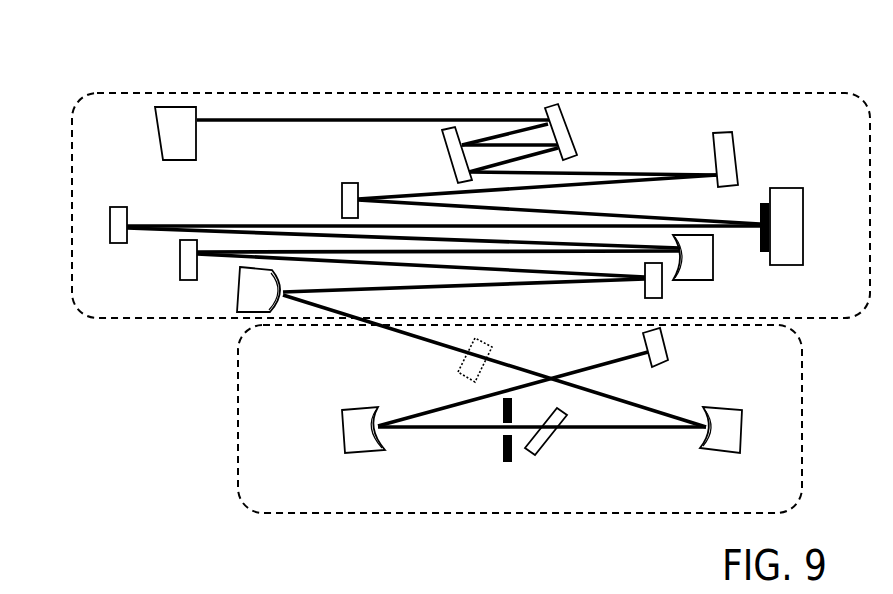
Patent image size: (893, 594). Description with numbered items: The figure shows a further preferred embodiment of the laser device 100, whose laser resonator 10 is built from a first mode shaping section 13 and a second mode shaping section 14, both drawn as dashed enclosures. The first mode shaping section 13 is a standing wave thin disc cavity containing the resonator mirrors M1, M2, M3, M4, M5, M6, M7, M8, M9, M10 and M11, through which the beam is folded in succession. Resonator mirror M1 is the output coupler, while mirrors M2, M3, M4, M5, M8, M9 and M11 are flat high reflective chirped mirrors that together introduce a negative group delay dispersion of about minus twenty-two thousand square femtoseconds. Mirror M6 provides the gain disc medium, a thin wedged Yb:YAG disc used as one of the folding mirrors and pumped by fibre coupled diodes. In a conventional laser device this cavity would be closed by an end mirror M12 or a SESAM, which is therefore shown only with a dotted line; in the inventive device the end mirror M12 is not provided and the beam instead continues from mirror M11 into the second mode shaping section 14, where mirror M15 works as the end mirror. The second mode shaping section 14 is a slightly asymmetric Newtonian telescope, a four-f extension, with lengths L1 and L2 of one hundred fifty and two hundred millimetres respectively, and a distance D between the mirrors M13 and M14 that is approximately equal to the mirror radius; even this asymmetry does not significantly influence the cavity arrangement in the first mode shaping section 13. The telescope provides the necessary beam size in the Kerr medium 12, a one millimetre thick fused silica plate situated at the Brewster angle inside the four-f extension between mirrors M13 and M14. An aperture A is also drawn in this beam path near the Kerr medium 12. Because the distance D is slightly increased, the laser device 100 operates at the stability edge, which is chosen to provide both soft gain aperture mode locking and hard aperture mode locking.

The laser device 100 is at (130, 66).
The laser resonator 10 is at (470, 319).
The first mode shaping section 13 is at (753, 93).
The second mode shaping section 14 is at (802, 460).
The Kerr medium 12 is at (549, 441).
The resonator mirror M1 is at (160, 133).
The resonator mirror M2 is at (575, 132).
The resonator mirror M3 is at (439, 155).
The resonator mirror M4 is at (741, 159).
The resonator mirror M5 is at (331, 196).
The resonator mirror M6 is at (797, 226).
The resonator mirror M7 is at (110, 212).
The resonator mirror M8 is at (710, 257).
The resonator mirror M9 is at (168, 262).
The resonator mirror M10 is at (676, 288).
The resonator mirror M11 is at (234, 289).
The end mirror M12 is at (496, 353).
The resonator mirror M13 is at (743, 430).
The resonator mirror M14 is at (342, 430).
The resonator mirror M15 is at (678, 347).
The distance L1 is at (518, 370).
The distance L2 is at (412, 420).
The aperture A is at (506, 445).
The distance D is at (628, 435).